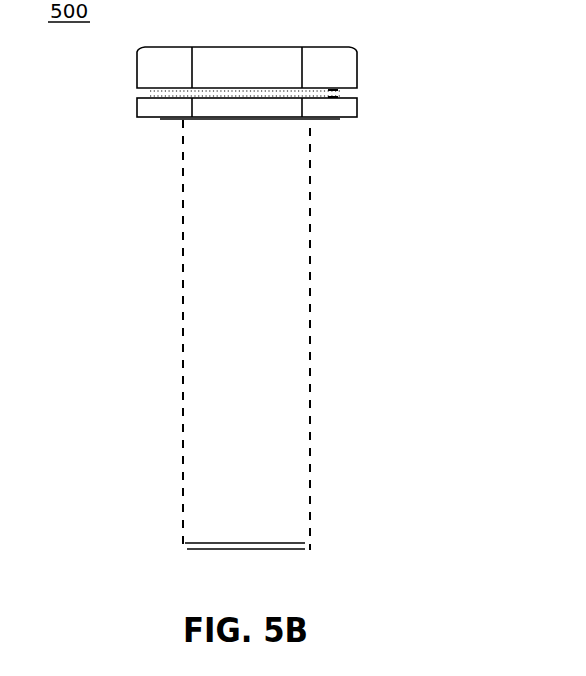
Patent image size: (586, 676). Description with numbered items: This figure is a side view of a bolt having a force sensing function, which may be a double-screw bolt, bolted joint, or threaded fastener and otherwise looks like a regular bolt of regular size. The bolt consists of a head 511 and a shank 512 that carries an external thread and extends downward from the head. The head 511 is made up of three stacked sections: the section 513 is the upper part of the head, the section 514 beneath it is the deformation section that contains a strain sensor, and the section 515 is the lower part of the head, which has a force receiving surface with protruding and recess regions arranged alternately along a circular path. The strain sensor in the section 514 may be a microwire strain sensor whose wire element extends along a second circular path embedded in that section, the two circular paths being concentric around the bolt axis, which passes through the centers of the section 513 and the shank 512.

The head 511 is at (462, 45).
The shank 512 is at (383, 122).
The section 513 is at (390, 45).
The section 514 is at (160, 94).
The section 515 is at (390, 97).